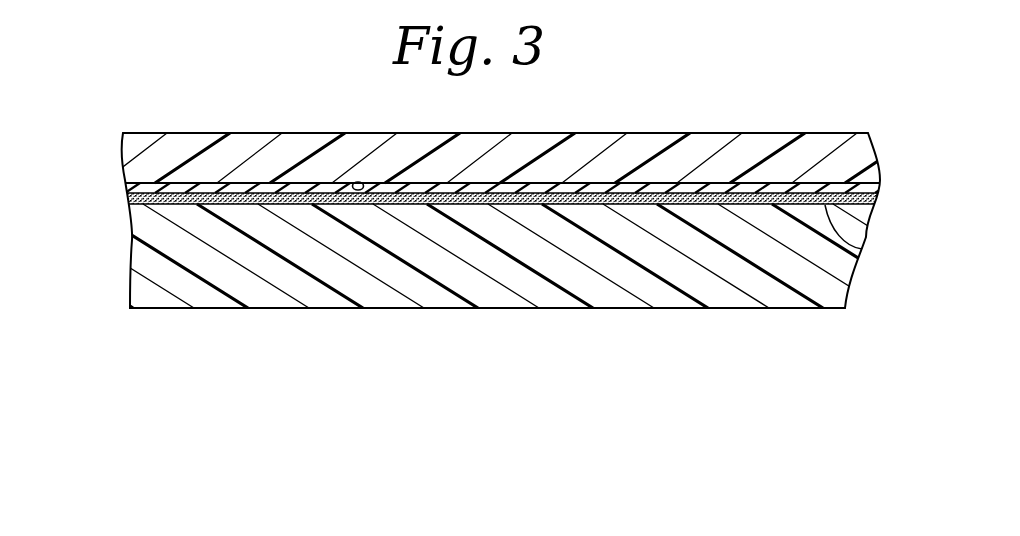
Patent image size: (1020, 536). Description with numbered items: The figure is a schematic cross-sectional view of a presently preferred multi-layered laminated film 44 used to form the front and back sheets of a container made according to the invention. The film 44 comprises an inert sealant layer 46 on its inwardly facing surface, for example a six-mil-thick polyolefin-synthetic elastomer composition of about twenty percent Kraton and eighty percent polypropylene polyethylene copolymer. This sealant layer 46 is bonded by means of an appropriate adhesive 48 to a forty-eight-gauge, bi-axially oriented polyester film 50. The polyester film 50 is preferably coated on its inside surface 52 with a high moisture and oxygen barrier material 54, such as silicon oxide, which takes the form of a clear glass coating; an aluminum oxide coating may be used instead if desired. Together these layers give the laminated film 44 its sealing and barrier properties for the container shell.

The laminated film 44 is at (114, 128).
The inert sealant layer 46 is at (573, 262).
The adhesive 48 is at (862, 249).
The bi-axially oriented polyester film 50 is at (617, 133).
The inside surface 52 is at (363, 180).
The high moisture and oxygen barrier material 54 is at (405, 194).